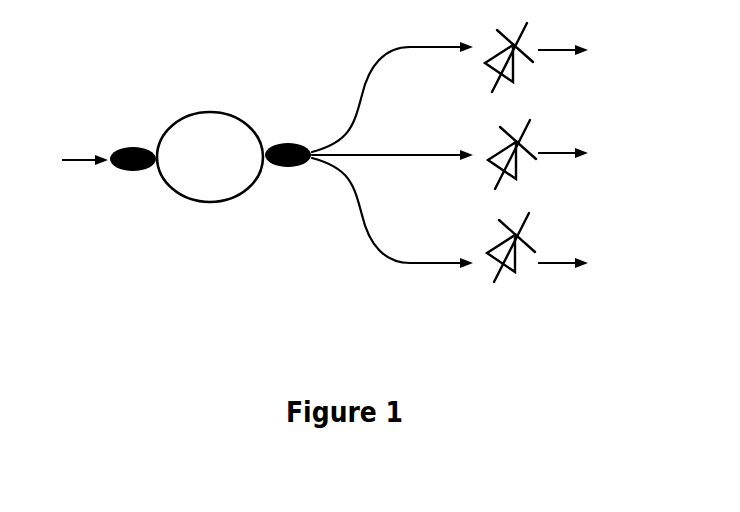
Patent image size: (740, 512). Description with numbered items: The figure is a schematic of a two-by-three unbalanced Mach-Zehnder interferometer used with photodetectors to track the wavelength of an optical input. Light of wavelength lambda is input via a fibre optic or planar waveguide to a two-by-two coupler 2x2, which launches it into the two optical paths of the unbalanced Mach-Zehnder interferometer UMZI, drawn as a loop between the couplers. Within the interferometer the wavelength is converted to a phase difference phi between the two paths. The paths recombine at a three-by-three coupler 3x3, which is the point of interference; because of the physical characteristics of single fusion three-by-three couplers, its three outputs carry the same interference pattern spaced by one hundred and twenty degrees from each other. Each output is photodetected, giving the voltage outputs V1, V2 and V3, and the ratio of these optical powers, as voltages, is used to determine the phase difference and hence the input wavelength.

The input light wavelength lambda is at (68, 156).
The 2×2 coupler 2x2 is at (134, 143).
The unbalanced Mach-Zehnder interferometer UMZI is at (210, 182).
The 3×3 coupler 3x3 is at (288, 137).
The phase difference phi is at (286, 200).
The first voltage output V1 is at (558, 57).
The second voltage output V2 is at (560, 154).
The third voltage output V3 is at (559, 247).